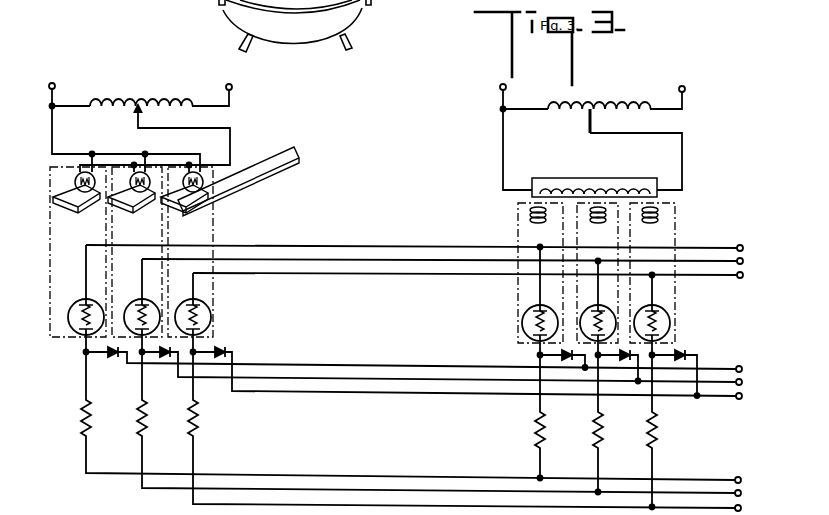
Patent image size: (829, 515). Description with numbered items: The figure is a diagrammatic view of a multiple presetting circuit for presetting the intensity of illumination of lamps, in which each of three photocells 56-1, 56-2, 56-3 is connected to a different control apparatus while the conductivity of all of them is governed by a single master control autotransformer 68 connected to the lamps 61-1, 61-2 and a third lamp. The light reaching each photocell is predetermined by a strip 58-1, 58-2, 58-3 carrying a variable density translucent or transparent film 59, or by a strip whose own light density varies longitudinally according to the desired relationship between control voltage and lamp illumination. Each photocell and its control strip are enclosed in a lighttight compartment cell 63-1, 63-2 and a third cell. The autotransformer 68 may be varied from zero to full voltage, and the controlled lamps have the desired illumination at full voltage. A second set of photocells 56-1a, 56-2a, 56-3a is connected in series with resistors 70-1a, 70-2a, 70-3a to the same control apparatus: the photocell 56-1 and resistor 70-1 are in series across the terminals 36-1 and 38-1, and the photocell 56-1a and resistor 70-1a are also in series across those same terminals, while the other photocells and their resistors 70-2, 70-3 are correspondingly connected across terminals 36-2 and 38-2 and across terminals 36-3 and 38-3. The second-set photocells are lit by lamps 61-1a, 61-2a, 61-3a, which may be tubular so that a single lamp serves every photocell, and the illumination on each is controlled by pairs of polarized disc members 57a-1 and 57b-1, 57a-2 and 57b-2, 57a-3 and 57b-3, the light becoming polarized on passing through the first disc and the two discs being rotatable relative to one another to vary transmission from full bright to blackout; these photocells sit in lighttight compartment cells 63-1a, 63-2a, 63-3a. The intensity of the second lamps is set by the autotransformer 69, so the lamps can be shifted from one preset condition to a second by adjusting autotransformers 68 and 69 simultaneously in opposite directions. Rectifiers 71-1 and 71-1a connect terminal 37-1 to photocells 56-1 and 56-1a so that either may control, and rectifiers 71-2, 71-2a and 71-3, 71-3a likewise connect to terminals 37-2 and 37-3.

The master control autotransformer 68 is at (133, 100).
The autotransformer 69 is at (624, 98).
The variable density translucent or transparent film 59 is at (290, 150).
The lamp 61-1 is at (75, 182).
The lamp 61-2 is at (148, 172).
The lighttight compartment cell 63-1 is at (52, 200).
The lighttight compartment cell 63-2 is at (116, 166).
The strip 58-1 is at (76, 209).
The strip 58-2 is at (131, 210).
The strip 58-3 is at (184, 211).
The photocell 56-1 is at (68, 310).
The photocell 56-2 is at (152, 308).
The photocell 56-3 is at (213, 313).
The rectifier 71-1 is at (113, 356).
The rectifier 71-2 is at (165, 358).
The rectifier 71-3 is at (228, 345).
The resistor 70-1 is at (80, 424).
The resistor 70-2 is at (137, 420).
The resistor 70-3 is at (189, 422).
The lamp 61-1a is at (594, 167).
The lamp 61-2a is at (562, 191).
The lamp 61-3a is at (617, 191).
The polarized disc member 57a-1 is at (528, 208).
The polarized disc member 57b-1 is at (528, 221).
The polarized disc member 57a-2 is at (599, 206).
The polarized disc member 57b-2 is at (597, 230).
The polarized disc member 57a-3 is at (662, 208).
The polarized disc member 57b-3 is at (660, 221).
The lighttight compartment cell 63-1a is at (518, 236).
The lighttight compartment cell 63-2a is at (637, 183).
The lighttight compartment cell 63-3a is at (676, 237).
The photocell 56-1a is at (523, 322).
The photocell 56-2a is at (584, 318).
The photocell 56-3a is at (670, 318).
The rectifier 71-1a is at (560, 355).
The rectifier 71-2a is at (618, 362).
The rectifier 71-3a is at (690, 352).
The resistor 70-1a is at (535, 426).
The resistor 70-2a is at (594, 432).
The resistor 70-3a is at (660, 432).
The terminal 36-1 is at (744, 249).
The terminal 36-2 is at (744, 262).
The terminal 36-3 is at (744, 276).
The terminal 37-1 is at (743, 369).
The terminal 37-2 is at (743, 382).
The terminal 37-3 is at (743, 396).
The terminal 38-1 is at (742, 479).
The terminal 38-2 is at (742, 493).
The terminal 38-3 is at (742, 507).